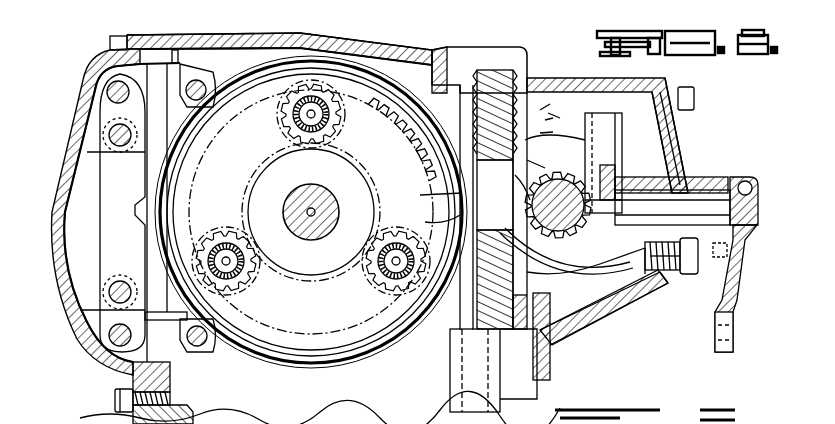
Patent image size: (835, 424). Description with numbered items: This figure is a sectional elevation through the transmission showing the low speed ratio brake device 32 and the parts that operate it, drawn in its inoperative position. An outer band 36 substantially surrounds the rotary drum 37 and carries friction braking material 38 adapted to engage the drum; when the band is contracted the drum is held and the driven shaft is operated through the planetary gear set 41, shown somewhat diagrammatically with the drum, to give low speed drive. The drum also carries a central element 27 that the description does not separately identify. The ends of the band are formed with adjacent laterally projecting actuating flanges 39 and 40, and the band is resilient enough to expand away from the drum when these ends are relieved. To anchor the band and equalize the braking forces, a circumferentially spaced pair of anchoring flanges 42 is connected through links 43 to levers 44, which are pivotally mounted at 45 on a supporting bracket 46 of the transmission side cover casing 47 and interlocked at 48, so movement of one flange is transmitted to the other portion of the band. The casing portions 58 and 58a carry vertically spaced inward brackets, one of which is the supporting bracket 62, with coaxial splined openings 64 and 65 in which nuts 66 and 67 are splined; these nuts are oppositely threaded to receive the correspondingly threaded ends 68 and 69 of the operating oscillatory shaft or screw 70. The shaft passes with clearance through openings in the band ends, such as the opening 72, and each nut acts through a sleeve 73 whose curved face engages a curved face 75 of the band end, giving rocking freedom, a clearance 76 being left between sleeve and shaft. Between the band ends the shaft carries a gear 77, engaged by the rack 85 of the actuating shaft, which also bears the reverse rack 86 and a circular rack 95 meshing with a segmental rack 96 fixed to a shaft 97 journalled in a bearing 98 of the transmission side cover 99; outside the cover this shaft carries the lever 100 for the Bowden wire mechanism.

The hub 27 is at (328, 200).
The brake device 32 is at (360, 62).
The outer band 36 is at (311, 360).
The drum 37 is at (344, 360).
The friction braking material 38 is at (280, 362).
The actuating flange 39 is at (425, 158).
The actuating flange 40 is at (434, 218).
The planetary gear set 41 is at (270, 158).
The anchoring flanges 42 is at (200, 72).
The links 43 is at (168, 78).
The levers 44 is at (100, 152).
The pivot 45 is at (110, 97).
The supporting bracket 46 is at (108, 135).
The transmission side cover casing 47 is at (100, 282).
The interlock 48 is at (110, 215).
The transmission casing portion 58 is at (575, 78).
The transmission casing portion 58a is at (560, 350).
The supporting bracket 62 is at (554, 105).
The splined opening 64 is at (557, 115).
The splined opening 65 is at (560, 300).
The nut 66 is at (554, 130).
The nut 67 is at (528, 345).
The threaded end 68 is at (495, 90).
The threaded end 69 is at (465, 340).
The operating oscillatory shaft 70 is at (528, 164).
The opening 72 is at (395, 290).
The sleeve 73 is at (342, 118).
The curved face 75 is at (553, 138).
The clearance 76 is at (455, 90).
The gear 77 is at (432, 193).
The rack 85 is at (519, 186).
The reverse rack 86 is at (558, 172).
The circular rack 95 is at (598, 190).
The segmental rack 96 is at (590, 160).
The shaft 97 is at (685, 180).
The bearing 98 is at (744, 188).
The transmission side cover 99 is at (682, 132).
The lever 100 is at (748, 278).